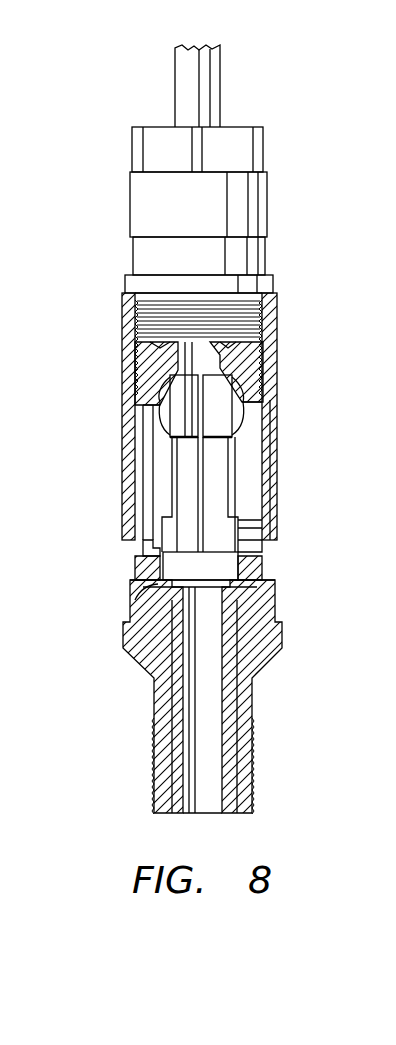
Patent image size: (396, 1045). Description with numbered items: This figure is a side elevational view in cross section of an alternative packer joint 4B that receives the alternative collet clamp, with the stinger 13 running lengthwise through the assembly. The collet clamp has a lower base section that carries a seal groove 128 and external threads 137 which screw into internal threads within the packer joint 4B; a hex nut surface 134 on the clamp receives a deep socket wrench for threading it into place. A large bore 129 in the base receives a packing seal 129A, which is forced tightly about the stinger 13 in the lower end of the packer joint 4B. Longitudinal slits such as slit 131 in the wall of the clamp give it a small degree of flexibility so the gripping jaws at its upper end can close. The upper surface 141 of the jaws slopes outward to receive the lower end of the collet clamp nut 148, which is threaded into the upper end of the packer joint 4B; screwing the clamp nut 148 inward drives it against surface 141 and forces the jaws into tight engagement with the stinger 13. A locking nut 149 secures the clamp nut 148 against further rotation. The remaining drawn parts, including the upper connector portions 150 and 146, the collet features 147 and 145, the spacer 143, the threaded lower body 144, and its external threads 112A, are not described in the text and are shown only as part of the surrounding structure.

The stinger 13 is at (205, 83).
The connector body 150 is at (240, 152).
The collet clamp nut 148 is at (250, 257).
The locking nut 149 is at (260, 285).
The threaded housing 146 is at (262, 317).
The upper surface of gripping jaws 141 is at (247, 375).
The collet 147 is at (272, 420).
The insulator sleeve 145 is at (250, 462).
The longitudinal slit 131 is at (200, 482).
The alternative packer joint 4B is at (278, 503).
The hex nut surface 134 is at (240, 523).
The external threads 137 is at (140, 548).
The large bore 129 is at (177, 565).
The packing seal 129A is at (238, 556).
The spacer 143 is at (245, 576).
The seal groove 128 is at (140, 600).
The threaded body 144 is at (284, 640).
The external threads 112A is at (255, 762).